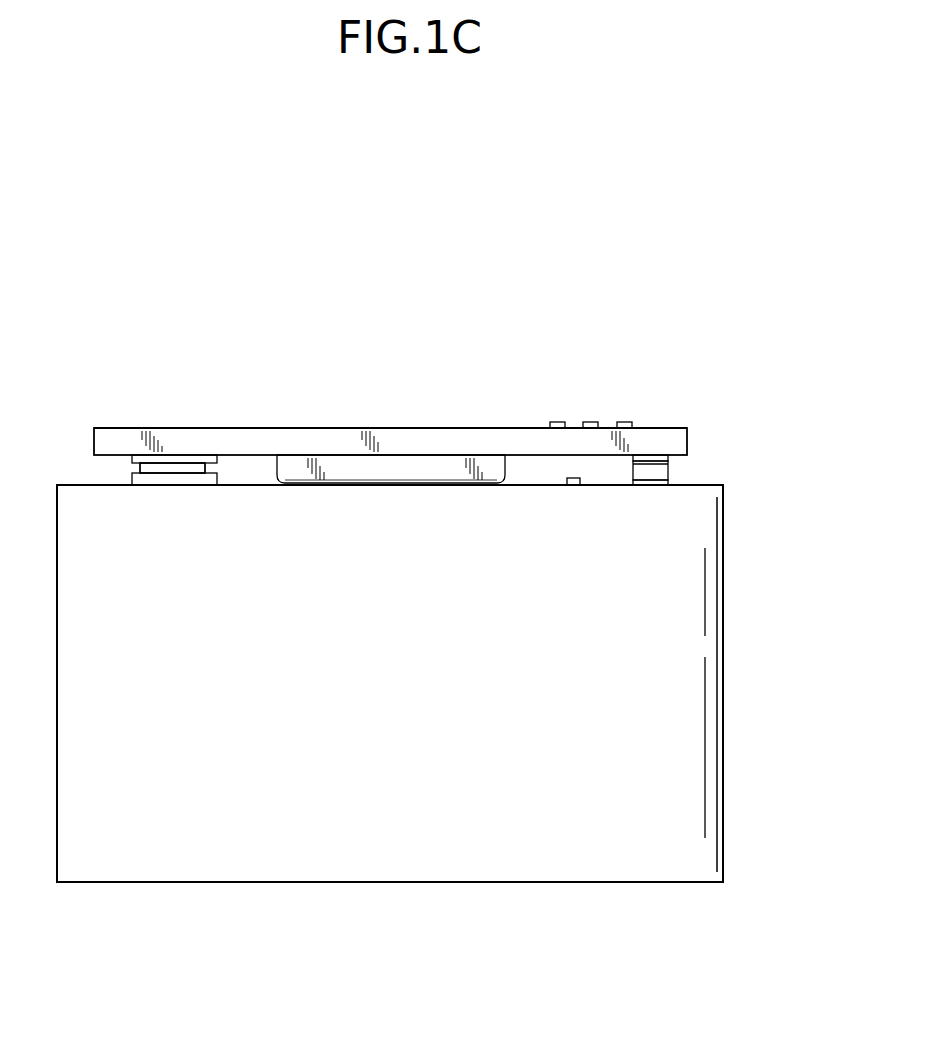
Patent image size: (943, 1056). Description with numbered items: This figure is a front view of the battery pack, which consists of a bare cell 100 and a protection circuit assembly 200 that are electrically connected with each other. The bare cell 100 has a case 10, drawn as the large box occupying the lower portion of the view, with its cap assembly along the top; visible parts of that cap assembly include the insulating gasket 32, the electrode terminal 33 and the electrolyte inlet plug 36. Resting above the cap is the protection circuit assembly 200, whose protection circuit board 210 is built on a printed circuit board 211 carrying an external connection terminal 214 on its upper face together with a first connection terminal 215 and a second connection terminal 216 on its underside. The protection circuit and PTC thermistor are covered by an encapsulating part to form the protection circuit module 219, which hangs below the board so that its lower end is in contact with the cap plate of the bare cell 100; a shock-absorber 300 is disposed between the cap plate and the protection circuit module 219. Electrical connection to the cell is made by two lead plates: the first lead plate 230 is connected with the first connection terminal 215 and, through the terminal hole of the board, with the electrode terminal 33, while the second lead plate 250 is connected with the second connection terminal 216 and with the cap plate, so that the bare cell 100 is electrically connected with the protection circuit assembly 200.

The case 10 is at (718, 703).
The bare cell 100 is at (742, 620).
The protection circuit assembly 200 is at (655, 410).
The protection circuit board 210 is at (256, 428).
The printed circuit board 211 is at (337, 428).
The external connection terminal 214 is at (560, 422).
The first connection terminal 215 is at (140, 462).
The second connection terminal 216 is at (658, 462).
The protection circuit module 219 is at (397, 460).
The first lead plate 230 is at (180, 465).
The second lead plate 250 is at (668, 470).
The shock-absorber 300 is at (442, 483).
The insulating gasket 32 is at (140, 470).
The electrode terminal 33 is at (130, 483).
The electrolyte inlet plug 36 is at (573, 478).